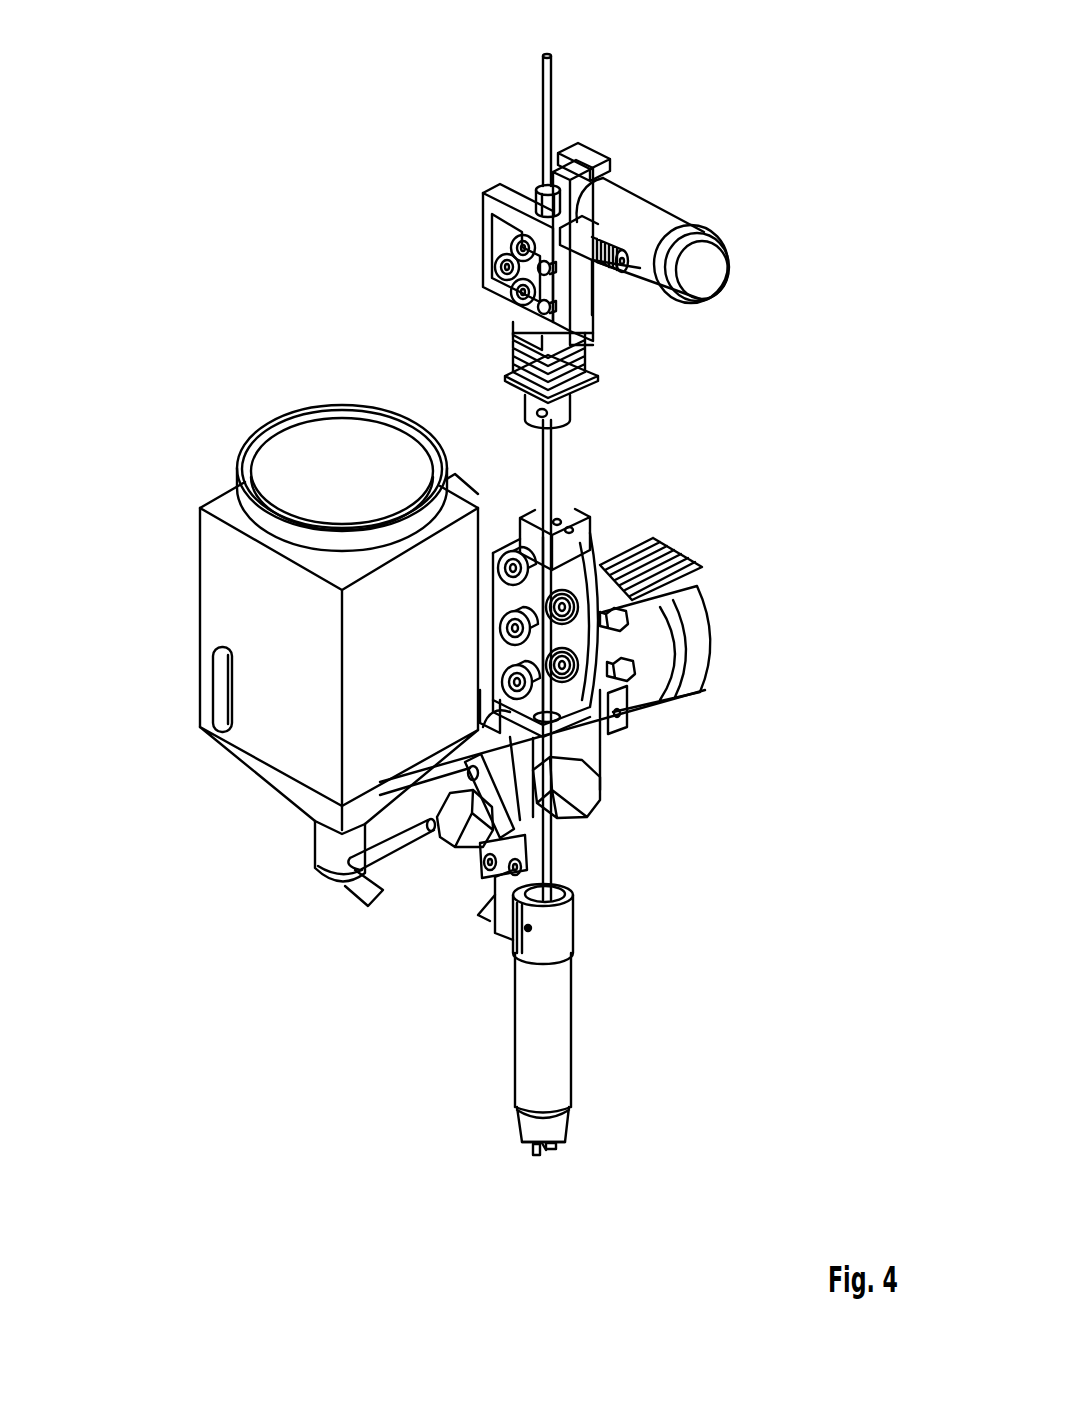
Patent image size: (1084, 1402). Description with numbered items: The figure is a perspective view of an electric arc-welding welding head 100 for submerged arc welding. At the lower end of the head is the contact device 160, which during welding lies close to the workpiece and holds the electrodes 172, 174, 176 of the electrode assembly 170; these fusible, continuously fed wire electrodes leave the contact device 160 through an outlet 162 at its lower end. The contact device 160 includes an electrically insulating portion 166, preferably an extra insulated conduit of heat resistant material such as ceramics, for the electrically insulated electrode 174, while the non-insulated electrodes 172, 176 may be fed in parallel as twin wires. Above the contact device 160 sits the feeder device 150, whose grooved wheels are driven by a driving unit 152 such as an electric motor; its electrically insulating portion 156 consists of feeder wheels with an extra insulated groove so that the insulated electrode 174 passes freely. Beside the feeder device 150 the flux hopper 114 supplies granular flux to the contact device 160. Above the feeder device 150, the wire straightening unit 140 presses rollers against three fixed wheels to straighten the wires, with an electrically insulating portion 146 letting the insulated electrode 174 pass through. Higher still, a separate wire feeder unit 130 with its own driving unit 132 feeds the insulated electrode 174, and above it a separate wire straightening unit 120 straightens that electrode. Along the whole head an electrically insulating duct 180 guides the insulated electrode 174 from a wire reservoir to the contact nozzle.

The electric arc-welding welding head 100 is at (300, 172).
The flux hopper 114 is at (212, 578).
The wire straightening unit 120 is at (533, 176).
The wire feeder unit 130 is at (480, 249).
The driving unit 132 is at (651, 212).
The wire straightening unit 140 is at (590, 570).
The electrically insulating portion 146 is at (538, 623).
The feeder device 150 is at (626, 770).
The driving unit 152 is at (702, 638).
The electrically insulating portion 156 is at (518, 802).
The contact device 160 is at (578, 995).
The outlet 162 is at (530, 1125).
The electrically insulating portion 166 is at (525, 917).
The electrode assembly 170 is at (568, 1143).
The wire electrode 172 is at (554, 1148).
The electrically insulated electrode 174 is at (547, 1158).
The wire electrode 176 is at (535, 1157).
The electrically insulating duct 180 is at (548, 108).